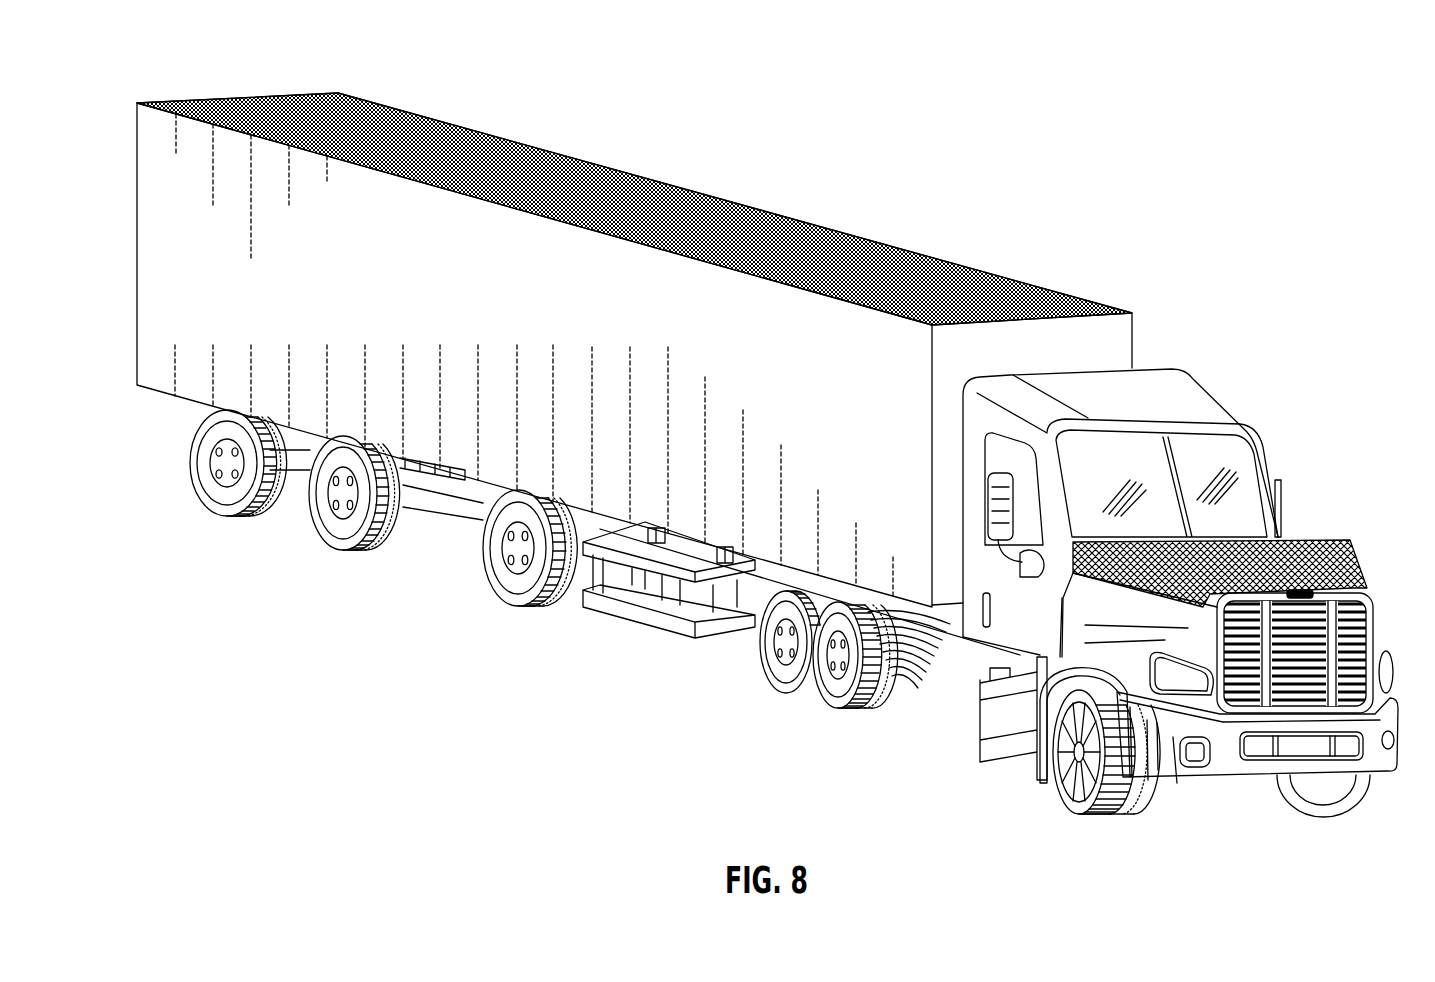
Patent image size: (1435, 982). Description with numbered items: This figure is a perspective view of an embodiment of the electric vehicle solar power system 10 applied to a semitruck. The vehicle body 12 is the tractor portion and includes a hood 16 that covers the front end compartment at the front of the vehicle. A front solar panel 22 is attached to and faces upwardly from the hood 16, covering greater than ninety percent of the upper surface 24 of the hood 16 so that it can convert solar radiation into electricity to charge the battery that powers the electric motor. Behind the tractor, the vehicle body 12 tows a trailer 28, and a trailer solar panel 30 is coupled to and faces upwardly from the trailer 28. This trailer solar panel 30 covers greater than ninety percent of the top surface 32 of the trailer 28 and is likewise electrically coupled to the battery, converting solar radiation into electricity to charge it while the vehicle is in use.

The electric vehicle solar power system 10 is at (1270, 220).
The vehicle body 12 is at (1170, 388).
The hood 16 is at (1112, 583).
The front solar panel 22 is at (1283, 563).
The upper surface 24 is at (1137, 580).
The trailer 28 is at (498, 450).
The trailer solar panel 30 is at (621, 172).
The top surface 32 is at (242, 98).